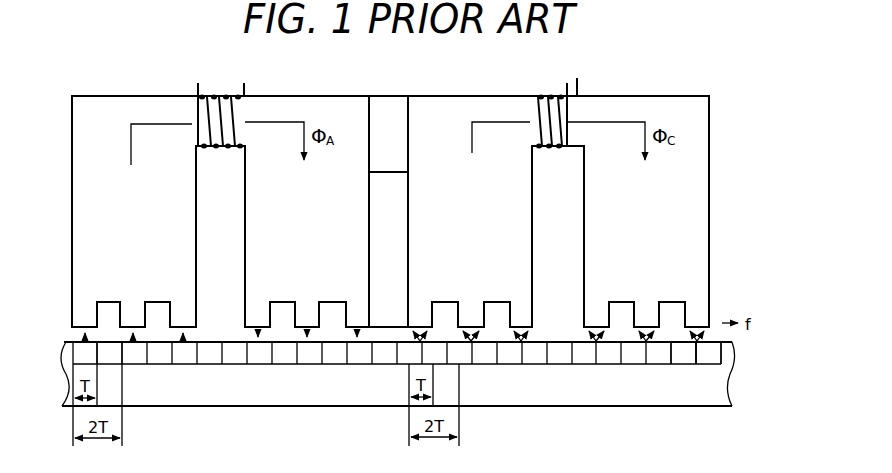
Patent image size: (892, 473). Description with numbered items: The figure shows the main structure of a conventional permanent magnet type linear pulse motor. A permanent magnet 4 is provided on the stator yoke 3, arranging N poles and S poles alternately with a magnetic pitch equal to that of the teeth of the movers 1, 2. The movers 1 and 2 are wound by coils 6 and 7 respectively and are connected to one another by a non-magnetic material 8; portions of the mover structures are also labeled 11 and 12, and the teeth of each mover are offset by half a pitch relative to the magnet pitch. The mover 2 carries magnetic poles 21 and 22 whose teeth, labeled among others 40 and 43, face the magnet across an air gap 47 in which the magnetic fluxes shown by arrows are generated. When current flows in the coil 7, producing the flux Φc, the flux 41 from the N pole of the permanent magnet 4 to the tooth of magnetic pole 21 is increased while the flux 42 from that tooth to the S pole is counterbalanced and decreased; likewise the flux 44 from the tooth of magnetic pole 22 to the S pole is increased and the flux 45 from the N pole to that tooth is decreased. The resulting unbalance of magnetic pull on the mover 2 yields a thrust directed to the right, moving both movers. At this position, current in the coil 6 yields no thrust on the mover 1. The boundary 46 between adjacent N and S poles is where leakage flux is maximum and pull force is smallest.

The mover 1 is at (273, 96).
The mover 2 is at (661, 96).
The stator yoke 3 is at (200, 396).
The permanent magnet 4 is at (68, 342).
The coil 6 is at (197, 88).
The coil 7 is at (578, 88).
The non-magnetic material 8 is at (392, 109).
The yoke 11 is at (72, 191).
The spacer lower part 12 is at (370, 188).
The magnetic pole 21 is at (407, 245).
The magnetic pole 22 is at (711, 244).
The pole tooth 40 is at (444, 331).
The magnetic flux 41 is at (532, 330).
The magnetic flux 42 is at (503, 325).
The pole tooth 43 is at (670, 333).
The magnetic flux 44 is at (713, 332).
The magnetic flux 45 is at (673, 333).
The boundary 46 is at (97, 341).
The gap 47 is at (558, 330).